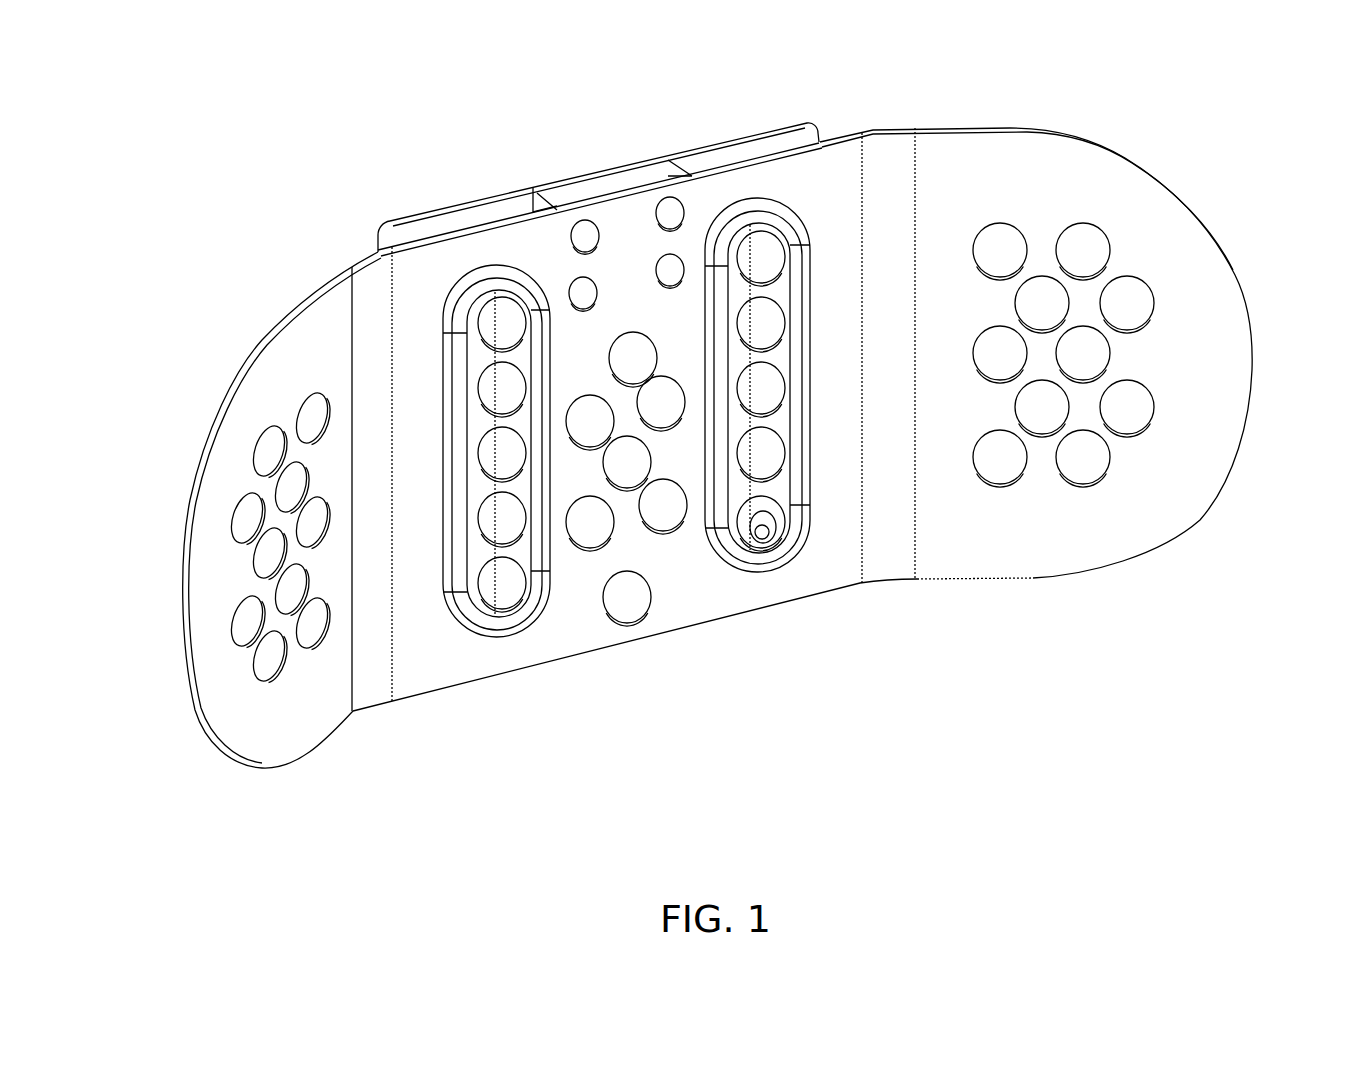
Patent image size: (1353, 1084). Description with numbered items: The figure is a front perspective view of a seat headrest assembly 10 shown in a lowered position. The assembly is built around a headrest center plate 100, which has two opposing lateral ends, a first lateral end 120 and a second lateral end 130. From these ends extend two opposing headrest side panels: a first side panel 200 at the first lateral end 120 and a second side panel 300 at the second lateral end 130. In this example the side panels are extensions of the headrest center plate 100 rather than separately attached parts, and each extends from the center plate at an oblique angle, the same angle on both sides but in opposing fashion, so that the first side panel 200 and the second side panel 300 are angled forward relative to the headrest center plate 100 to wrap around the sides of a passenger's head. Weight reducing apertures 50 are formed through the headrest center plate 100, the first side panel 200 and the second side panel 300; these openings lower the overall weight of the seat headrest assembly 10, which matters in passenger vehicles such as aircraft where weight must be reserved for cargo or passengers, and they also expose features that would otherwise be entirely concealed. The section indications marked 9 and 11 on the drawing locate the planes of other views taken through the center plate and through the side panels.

The seat headrest assembly 10 is at (328, 143).
The headrest center plate 100 is at (502, 242).
The first lateral end 120 is at (865, 255).
The second lateral end 130 is at (387, 350).
The first side panel 200 is at (1108, 188).
The second side panel 300 is at (266, 375).
The weight reducing apertures 50 is at (622, 597).
The section line 9- 9 is at (668, 160).
The section line 11- 11 is at (1190, 200).